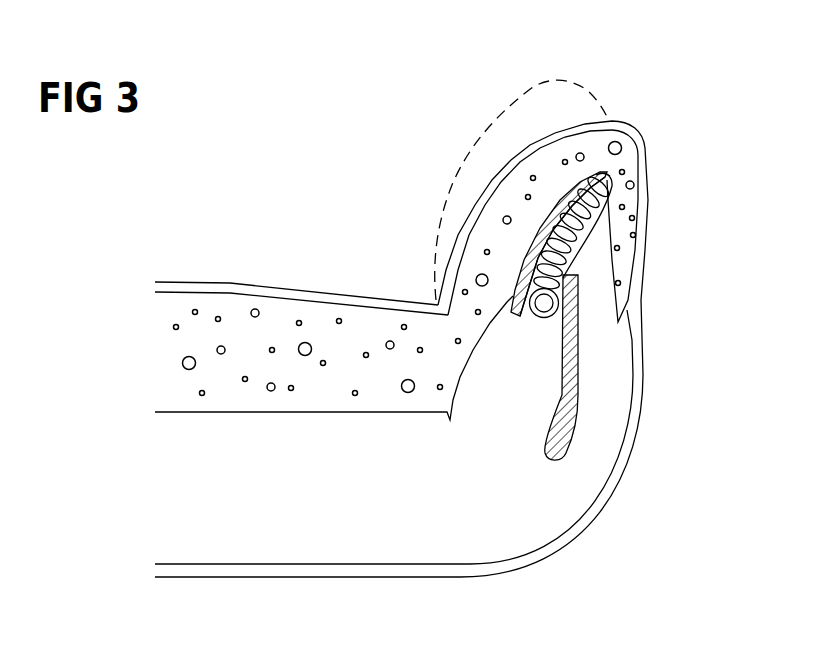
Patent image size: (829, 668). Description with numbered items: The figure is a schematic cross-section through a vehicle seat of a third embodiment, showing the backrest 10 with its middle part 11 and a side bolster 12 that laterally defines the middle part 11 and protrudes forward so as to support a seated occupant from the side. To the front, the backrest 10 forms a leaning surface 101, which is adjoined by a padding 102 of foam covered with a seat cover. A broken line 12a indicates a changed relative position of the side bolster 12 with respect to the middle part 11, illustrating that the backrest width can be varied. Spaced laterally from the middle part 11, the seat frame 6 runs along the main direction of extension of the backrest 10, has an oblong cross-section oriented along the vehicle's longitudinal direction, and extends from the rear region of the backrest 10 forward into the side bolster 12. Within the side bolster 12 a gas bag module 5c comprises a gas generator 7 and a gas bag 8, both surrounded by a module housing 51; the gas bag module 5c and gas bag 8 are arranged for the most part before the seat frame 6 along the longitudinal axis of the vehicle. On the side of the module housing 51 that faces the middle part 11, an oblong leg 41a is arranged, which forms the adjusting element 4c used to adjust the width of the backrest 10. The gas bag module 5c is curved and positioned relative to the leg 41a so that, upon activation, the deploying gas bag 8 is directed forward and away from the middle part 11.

The backrest 10 is at (569, 569).
The middle part 11 is at (334, 300).
The leaning surface 101 is at (265, 292).
The padding 102 is at (183, 343).
The side bolster 12 is at (654, 282).
The broken line 12a is at (537, 80).
The adjusting element 4c is at (522, 212).
The leg 41a is at (553, 186).
The gas generator 7 is at (520, 262).
The gas bag 8 is at (530, 257).
The module housing 51 is at (580, 234).
The gas bag module 5c is at (624, 176).
The seat frame 6 is at (572, 452).